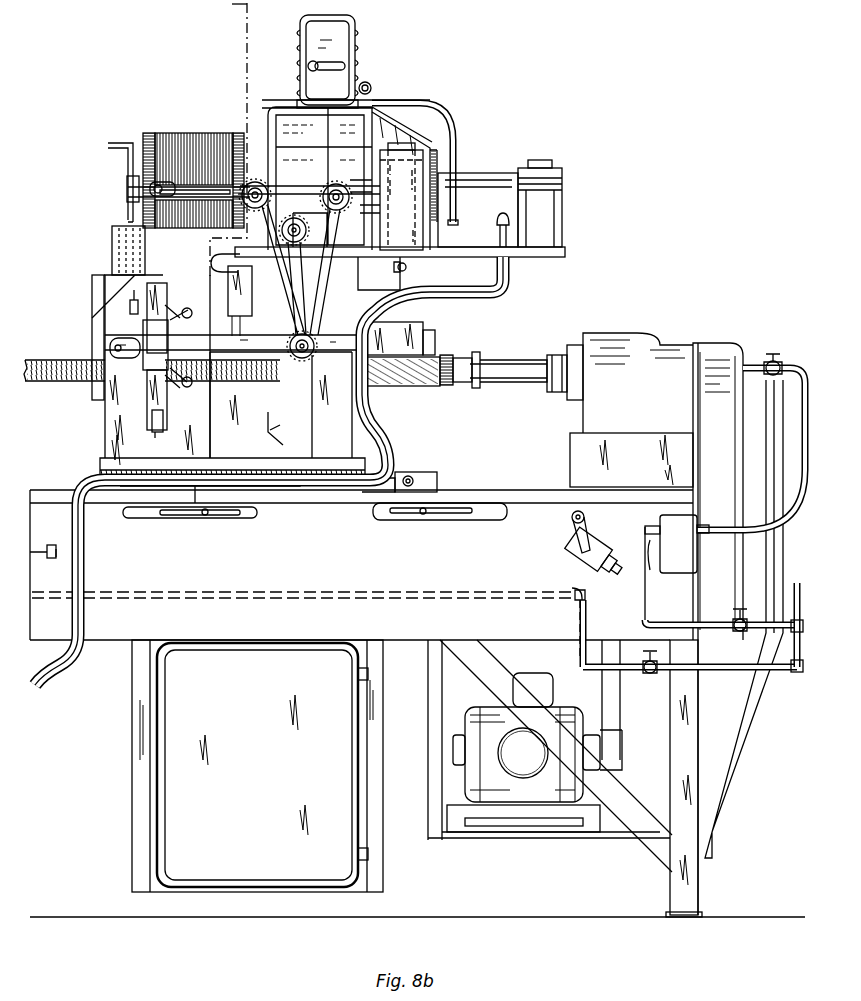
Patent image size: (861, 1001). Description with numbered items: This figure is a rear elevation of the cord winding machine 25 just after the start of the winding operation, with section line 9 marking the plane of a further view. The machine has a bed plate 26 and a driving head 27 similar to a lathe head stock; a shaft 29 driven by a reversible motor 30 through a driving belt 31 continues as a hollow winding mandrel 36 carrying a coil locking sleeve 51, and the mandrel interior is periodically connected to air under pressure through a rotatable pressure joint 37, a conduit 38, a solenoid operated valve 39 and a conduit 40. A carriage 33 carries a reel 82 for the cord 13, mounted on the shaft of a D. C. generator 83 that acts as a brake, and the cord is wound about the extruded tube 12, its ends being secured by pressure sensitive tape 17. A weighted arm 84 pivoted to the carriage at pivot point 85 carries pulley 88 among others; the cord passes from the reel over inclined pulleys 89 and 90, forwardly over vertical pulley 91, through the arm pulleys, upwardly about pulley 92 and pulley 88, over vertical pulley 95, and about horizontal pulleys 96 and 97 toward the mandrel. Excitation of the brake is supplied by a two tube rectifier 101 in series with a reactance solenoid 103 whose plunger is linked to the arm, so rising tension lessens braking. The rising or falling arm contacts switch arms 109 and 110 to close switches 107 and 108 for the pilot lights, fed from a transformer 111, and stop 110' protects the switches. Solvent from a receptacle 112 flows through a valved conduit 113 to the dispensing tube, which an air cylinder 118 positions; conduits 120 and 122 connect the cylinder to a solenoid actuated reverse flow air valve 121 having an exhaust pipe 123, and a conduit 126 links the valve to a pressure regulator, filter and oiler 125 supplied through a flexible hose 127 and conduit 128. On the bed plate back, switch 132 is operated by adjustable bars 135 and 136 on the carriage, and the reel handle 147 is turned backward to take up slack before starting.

The section line 9 is at (185, 437).
The extruded seamless tube 12 is at (58, 384).
The elastomeric thermoplastic cord 13 is at (172, 133).
The pressure sensitive tape 17 is at (452, 386).
The machine 25 is at (733, 783).
The bed plate 26 is at (505, 490).
The driving head 27 is at (684, 338).
The shaft 29 is at (550, 392).
The reversible motor 30 is at (476, 704).
The driving belt 31 is at (620, 710).
The carriage 33 is at (437, 472).
The winding mandrel 36 is at (488, 383).
The rotatable pressure joint 37 is at (773, 360).
The conduit 38 is at (800, 500).
The solenoid operated valve 39 is at (677, 570).
The conduit 40 is at (811, 562).
The coil locking sleeve 51 is at (477, 351).
The reel 82 is at (148, 133).
The D. C. generator 83 is at (407, 130).
The weighted arm 84 is at (420, 328).
The pivot point 85 is at (100, 339).
The pulley 88 is at (313, 356).
The inclined pulley 89 is at (217, 230).
The inclined pulley 90 is at (150, 192).
The vertical pulley 91 is at (272, 194).
The pulley 92 is at (297, 248).
The vertical pulley 95 is at (330, 206).
The horizontal pulley 96 is at (349, 188).
The horizontal pulley 97 is at (277, 180).
The two tube rectifier 101 is at (257, 766).
The reactance solenoid 103 is at (112, 245).
The on-off switch 107 is at (148, 310).
The on-off switch 108 is at (147, 368).
The switch arm 109 is at (206, 294).
The switch arm 110 is at (186, 393).
The stop 110' is at (290, 428).
The transformer 111 is at (562, 220).
The receptacle 112 is at (401, 196).
The valved conduit 113 is at (410, 266).
The air cylinder 118 is at (212, 262).
The conduit 120 is at (266, 106).
The solenoid actuated reverse flow air valve 121 is at (353, 24).
The conduit 122 is at (291, 102).
The exhaust pipe 123 is at (371, 85).
The pressure regulator, filter and oiler 125 is at (471, 173).
The conduit 126 is at (445, 120).
The flexible hose 127 is at (479, 296).
The conduit 128 is at (741, 672).
The on-off switch 132 is at (583, 563).
The adjustable operating bar 135 is at (494, 516).
The adjustable operating bar 136 is at (152, 520).
The handle 147 is at (117, 148).